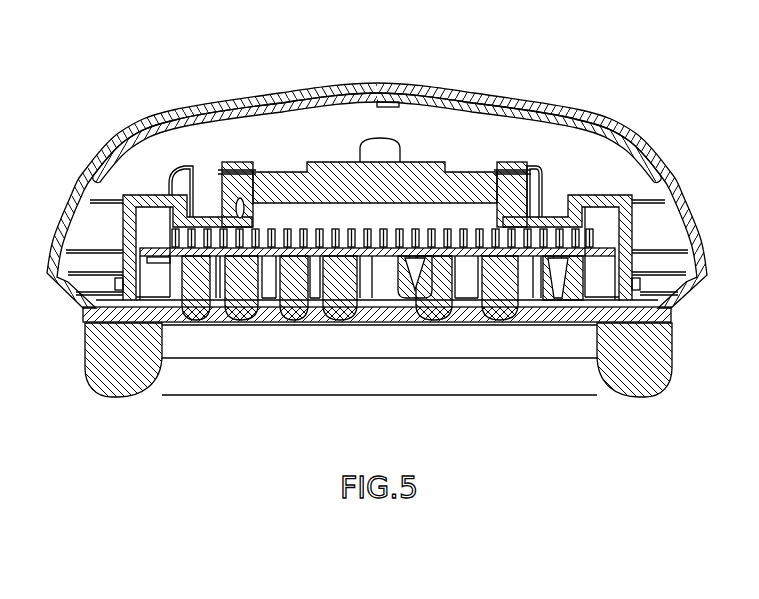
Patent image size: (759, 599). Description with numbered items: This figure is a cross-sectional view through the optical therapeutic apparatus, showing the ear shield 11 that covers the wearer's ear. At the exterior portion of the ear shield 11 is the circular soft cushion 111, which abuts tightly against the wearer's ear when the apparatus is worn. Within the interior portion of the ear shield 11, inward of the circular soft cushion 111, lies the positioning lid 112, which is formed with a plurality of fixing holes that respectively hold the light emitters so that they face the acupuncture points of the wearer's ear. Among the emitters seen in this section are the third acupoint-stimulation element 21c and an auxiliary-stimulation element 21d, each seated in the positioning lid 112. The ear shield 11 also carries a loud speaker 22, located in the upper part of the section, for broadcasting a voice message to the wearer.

The ear shield 11 is at (685, 207).
The circular soft cushion 111 is at (672, 346).
The positioning lid 112 is at (540, 322).
The loud speaker 22 is at (416, 162).
The third acupoint-stimulation element 21c is at (460, 322).
The auxiliary-stimulation element 21d is at (196, 320).